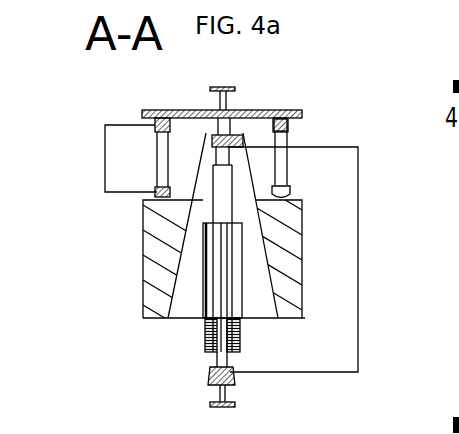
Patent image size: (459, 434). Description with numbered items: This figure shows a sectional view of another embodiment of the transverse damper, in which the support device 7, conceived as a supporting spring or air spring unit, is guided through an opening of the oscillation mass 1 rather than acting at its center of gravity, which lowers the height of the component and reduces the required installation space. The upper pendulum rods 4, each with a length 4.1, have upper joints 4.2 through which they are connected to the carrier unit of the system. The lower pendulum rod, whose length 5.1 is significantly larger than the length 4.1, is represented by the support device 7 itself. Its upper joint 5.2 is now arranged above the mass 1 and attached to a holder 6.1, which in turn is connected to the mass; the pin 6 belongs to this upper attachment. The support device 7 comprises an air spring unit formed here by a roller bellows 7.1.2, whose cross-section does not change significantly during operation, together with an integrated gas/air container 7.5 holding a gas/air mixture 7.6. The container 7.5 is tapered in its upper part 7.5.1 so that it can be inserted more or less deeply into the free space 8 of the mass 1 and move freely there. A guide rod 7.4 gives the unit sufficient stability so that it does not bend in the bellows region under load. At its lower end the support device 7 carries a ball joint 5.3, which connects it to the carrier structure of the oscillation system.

The mass 1 is at (270, 272).
The upper pendulum rod 4 is at (157, 148).
The length of the upper pendulum rod 4.1 is at (122, 158).
The upper joint 4.2 is at (288, 128).
The length of the lower pendulum rod 5.1 is at (308, 259).
The upper joint of the pendulum rod 5.2 is at (213, 133).
The ball joint 5.3 is at (213, 370).
The pin 6 is at (224, 112).
The holder 6.1 is at (222, 147).
The support device 7 is at (175, 327).
The roller bellows 7.1.2 is at (240, 343).
The guide rod 7.4 is at (222, 249).
The gas/air container 7.5 is at (203, 275).
The upper part of the container 7.5.1 is at (157, 195).
The gas/air mixture 7.6 is at (205, 299).
The free space 8 is at (278, 318).